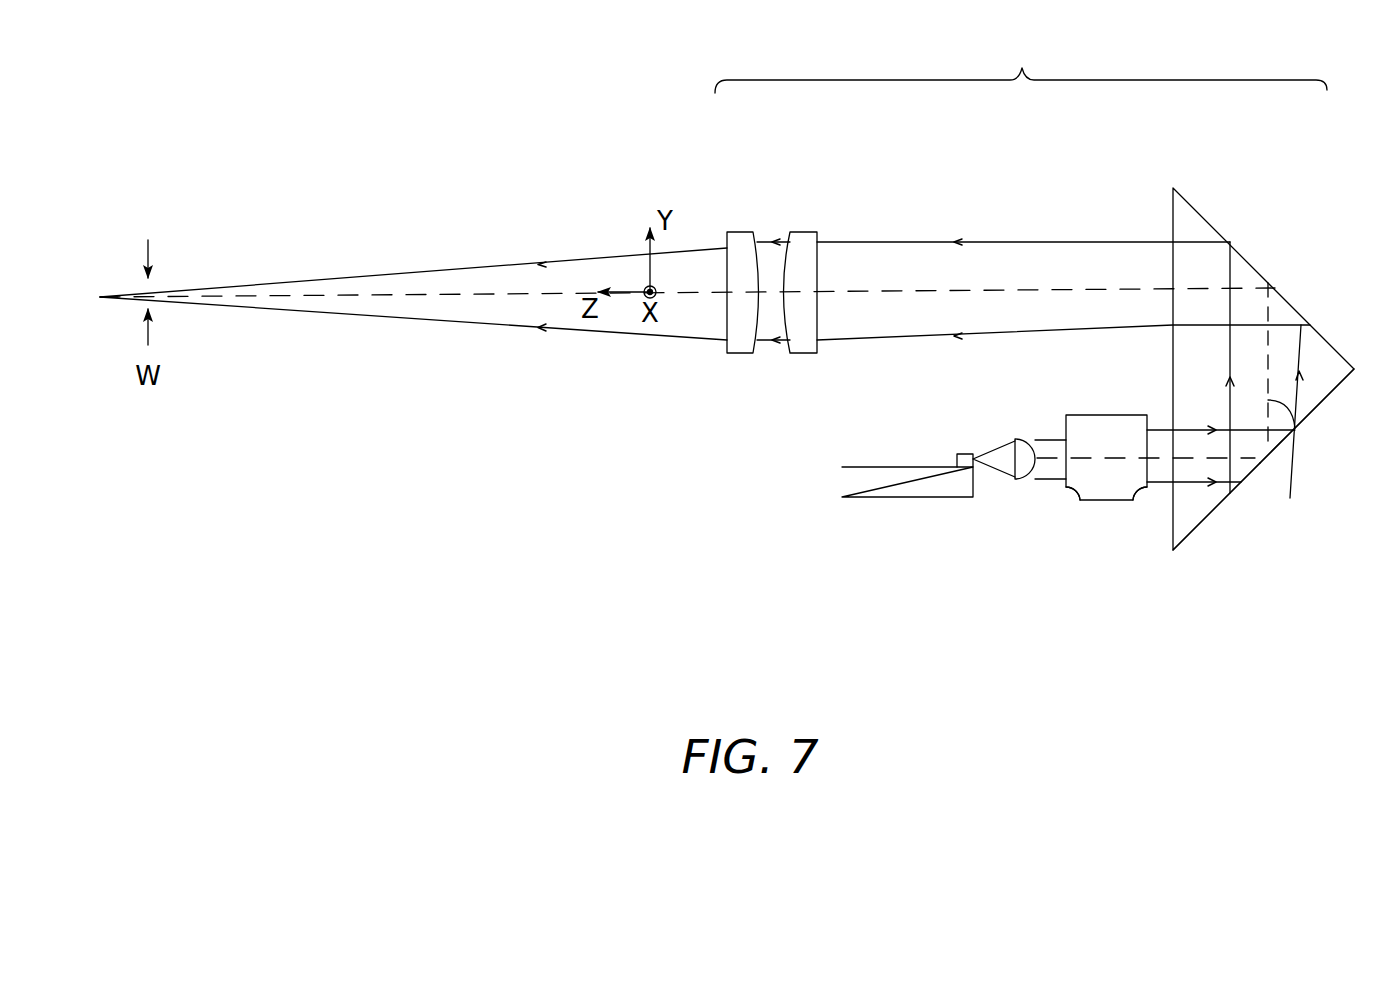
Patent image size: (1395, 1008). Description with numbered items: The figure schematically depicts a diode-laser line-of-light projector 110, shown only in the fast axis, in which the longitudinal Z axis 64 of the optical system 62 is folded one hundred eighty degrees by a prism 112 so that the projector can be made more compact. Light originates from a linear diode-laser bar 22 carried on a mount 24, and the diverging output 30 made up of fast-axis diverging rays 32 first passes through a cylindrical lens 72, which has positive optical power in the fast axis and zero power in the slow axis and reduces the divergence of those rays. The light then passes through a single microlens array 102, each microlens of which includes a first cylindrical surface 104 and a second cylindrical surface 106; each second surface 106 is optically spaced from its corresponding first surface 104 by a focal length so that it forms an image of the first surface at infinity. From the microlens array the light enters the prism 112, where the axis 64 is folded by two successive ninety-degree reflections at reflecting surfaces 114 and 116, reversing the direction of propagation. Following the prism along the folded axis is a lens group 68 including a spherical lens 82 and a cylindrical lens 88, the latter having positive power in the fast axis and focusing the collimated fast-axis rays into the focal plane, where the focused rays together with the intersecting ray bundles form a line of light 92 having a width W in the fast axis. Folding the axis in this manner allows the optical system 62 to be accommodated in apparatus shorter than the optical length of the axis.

The diode-laser line-of-light projector 110 is at (632, 552).
The optical system 62 is at (1021, 64).
The line of light 92 is at (165, 285).
The cylindrical lens 88 is at (745, 238).
The spherical lens 82 is at (805, 237).
The longitudinal (Z) axis 64 is at (1015, 288).
The lens group 68 is at (785, 373).
The reflecting surface 116 is at (1250, 262).
The prism 112 is at (1328, 424).
The reflecting surface 114 is at (1212, 513).
The microlens array 102 is at (1112, 414).
The first cylindrical surface 104 is at (1087, 492).
The second cylindrical surface 106 is at (1133, 492).
The cylindrical lens 72 is at (1030, 480).
The diverging beam 30 is at (985, 445).
The fast-axis diverging rays 32 is at (997, 467).
The diode-laser bar 22 is at (960, 466).
The laser mount 24 is at (858, 483).